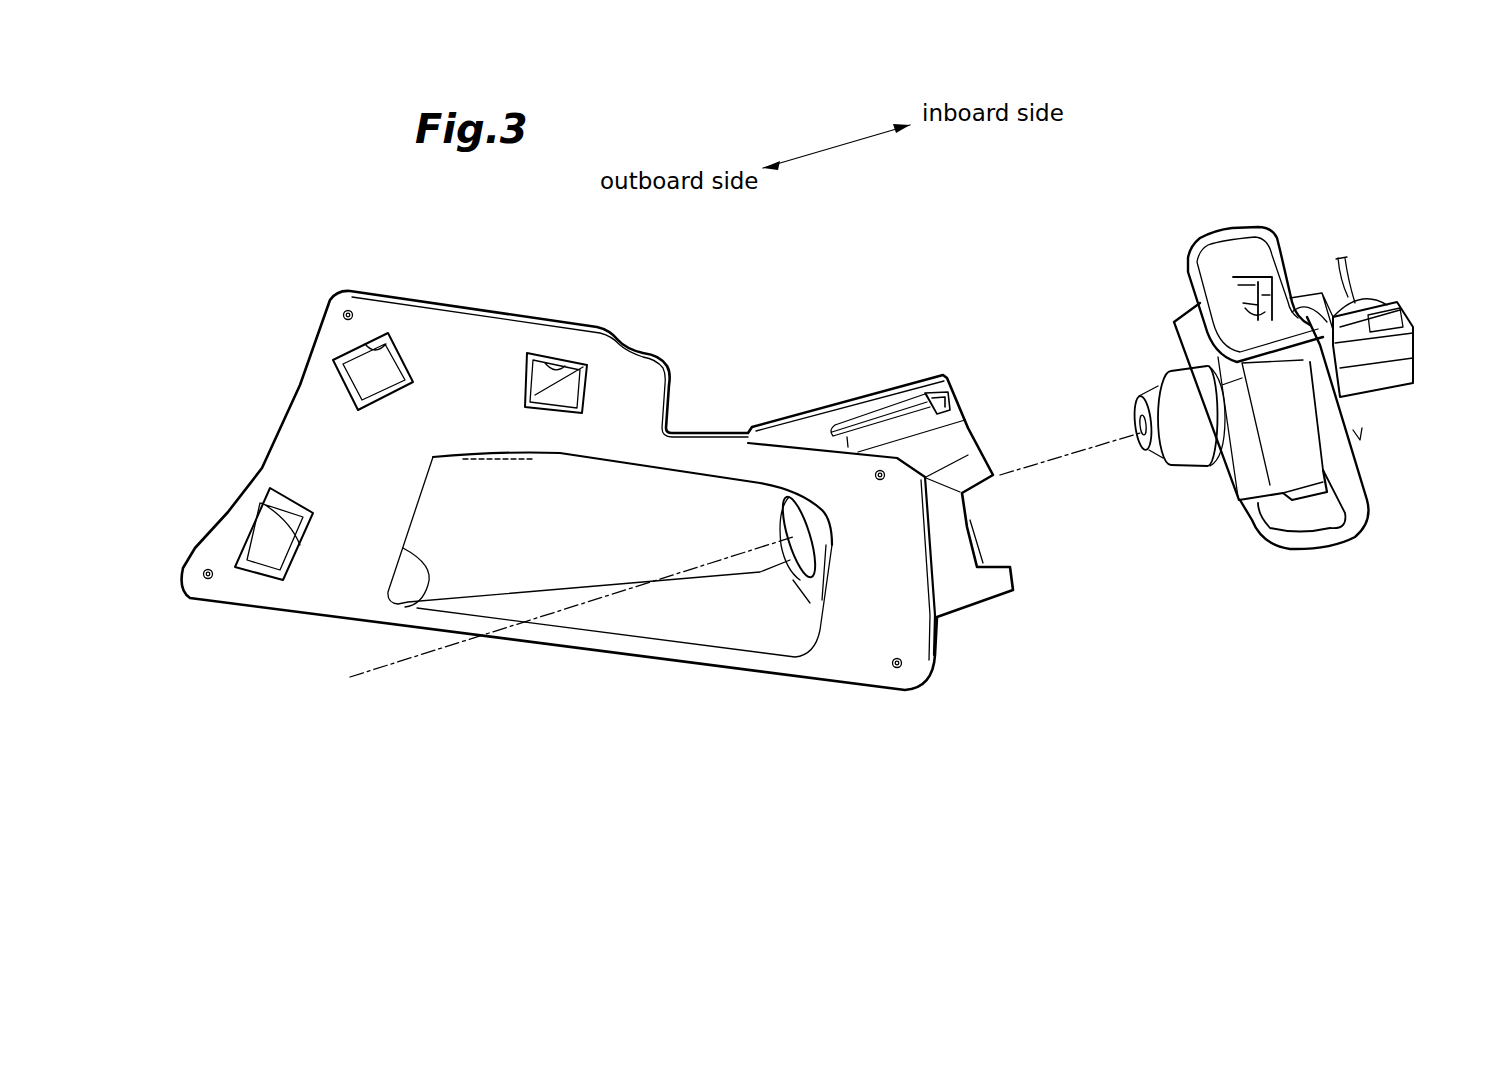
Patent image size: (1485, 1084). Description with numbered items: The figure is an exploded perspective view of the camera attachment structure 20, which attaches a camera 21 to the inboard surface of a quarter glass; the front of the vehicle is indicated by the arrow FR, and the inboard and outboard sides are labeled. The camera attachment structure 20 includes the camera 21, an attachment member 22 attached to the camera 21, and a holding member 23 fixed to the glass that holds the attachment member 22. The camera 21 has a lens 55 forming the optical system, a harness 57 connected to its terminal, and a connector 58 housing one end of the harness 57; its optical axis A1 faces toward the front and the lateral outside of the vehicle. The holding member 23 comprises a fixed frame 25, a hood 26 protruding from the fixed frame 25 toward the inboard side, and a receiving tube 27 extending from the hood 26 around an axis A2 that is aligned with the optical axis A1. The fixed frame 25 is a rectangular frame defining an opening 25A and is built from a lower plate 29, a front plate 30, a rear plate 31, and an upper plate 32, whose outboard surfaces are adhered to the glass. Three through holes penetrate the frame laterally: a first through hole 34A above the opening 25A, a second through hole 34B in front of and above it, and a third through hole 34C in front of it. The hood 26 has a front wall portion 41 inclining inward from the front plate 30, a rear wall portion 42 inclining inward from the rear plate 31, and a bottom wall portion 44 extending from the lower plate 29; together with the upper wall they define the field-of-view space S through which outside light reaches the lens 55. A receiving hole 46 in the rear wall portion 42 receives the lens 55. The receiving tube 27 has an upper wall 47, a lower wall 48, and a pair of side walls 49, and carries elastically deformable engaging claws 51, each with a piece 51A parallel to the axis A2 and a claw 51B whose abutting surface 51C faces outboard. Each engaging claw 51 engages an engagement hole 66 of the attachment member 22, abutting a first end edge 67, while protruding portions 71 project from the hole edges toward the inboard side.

The camera attachment structure 20 is at (1061, 193).
The camera 21 is at (1216, 504).
The attachment member 22 is at (1277, 222).
The holding member 23 is at (665, 345).
The fixed frame 25 is at (297, 367).
The opening 25A is at (388, 603).
The hood 26 is at (465, 495).
The receiving tube 27 is at (981, 609).
The lower plate 29 is at (655, 652).
The front plate 30 is at (347, 468).
The rear plate 31 is at (868, 640).
The upper plate 32 is at (490, 427).
The first through hole 34A is at (567, 360).
The second through hole 34B is at (380, 340).
The third through hole 34C is at (295, 530).
The front wall portion 41 is at (600, 505).
The rear wall portion 42 is at (810, 605).
The bottom wall portion 44 is at (607, 622).
The receiving hole 46 is at (780, 513).
The upper wall 47 is at (987, 437).
The lower wall 48 is at (988, 550).
The side walls 49 is at (943, 573).
The engaging claw 51 is at (947, 374).
The piece 51A is at (867, 437).
The claw 51B is at (960, 378).
The abutting surface 51C is at (910, 403).
The lens 55 is at (1133, 415).
The harness 57 is at (1350, 287).
The connector 58 is at (1355, 385).
The engagement hole 66 is at (1243, 303).
The first end edge 67 is at (1248, 272).
The protruding portion 71 is at (1365, 387).
The optical axis A1 is at (1088, 440).
The axis A2 is at (745, 555).
The field-of-view space S is at (748, 613).
The front direction FR is at (275, 736).